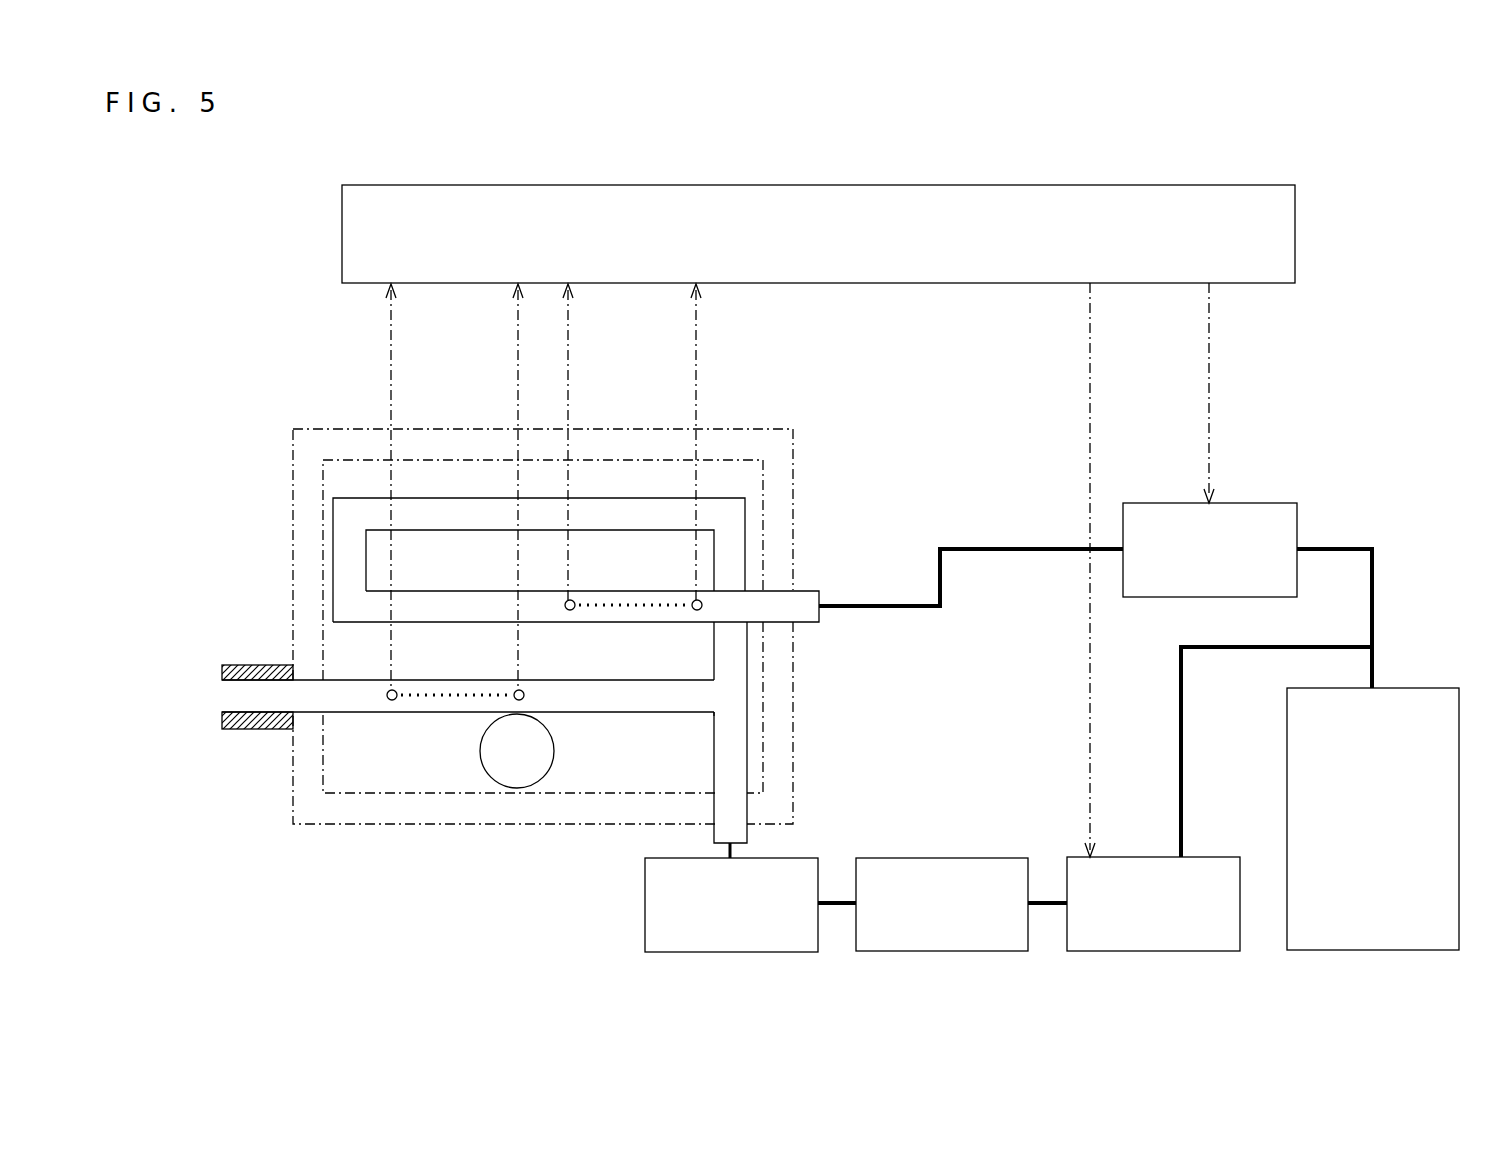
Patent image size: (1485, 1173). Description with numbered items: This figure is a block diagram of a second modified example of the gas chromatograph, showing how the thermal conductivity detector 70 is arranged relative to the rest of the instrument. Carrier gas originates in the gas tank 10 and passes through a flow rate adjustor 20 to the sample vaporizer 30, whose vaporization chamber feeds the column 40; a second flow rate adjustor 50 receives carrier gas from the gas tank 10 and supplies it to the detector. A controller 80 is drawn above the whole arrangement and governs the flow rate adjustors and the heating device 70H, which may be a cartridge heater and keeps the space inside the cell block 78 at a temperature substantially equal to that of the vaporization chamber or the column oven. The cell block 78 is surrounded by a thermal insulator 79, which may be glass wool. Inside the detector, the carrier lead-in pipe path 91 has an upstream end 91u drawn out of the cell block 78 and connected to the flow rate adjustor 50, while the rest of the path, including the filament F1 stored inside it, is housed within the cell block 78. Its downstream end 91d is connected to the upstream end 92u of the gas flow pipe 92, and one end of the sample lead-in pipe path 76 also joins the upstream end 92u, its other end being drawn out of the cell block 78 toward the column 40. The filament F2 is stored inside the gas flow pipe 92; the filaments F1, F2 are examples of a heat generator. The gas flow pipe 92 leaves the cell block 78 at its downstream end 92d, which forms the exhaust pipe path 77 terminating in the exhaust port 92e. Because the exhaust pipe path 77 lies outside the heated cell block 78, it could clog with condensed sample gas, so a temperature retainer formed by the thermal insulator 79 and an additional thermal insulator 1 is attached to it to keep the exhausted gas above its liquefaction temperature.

The thermal insulator 1 is at (1410, 205).
The gas tank 10 is at (1402, 688).
The flow rate adjustor 20 is at (1210, 856).
The sample vaporizer 30 is at (970, 856).
The column 40 is at (760, 856).
The flow rate adjustor 50 is at (1237, 503).
The thermal conductivity detector 70 is at (523, 587).
The heating device 70H is at (539, 768).
The sample lead-in pipe path 76 is at (712, 777).
The exhaust pipe path 77 is at (180, 789).
The cell block 78 is at (720, 457).
The thermal insulator 79 is at (612, 444).
The controller 80 is at (1238, 185).
The carrier lead-in pipe path 91 is at (778, 590).
The upstream end 91u is at (815, 623).
The downstream end 91d is at (748, 672).
The gas flow pipe 92 is at (424, 713).
The upstream end 92u is at (712, 713).
The downstream end 92d is at (236, 718).
The exhaust port 92e is at (220, 693).
The filament F1 is at (598, 602).
The filament F2 is at (418, 684).